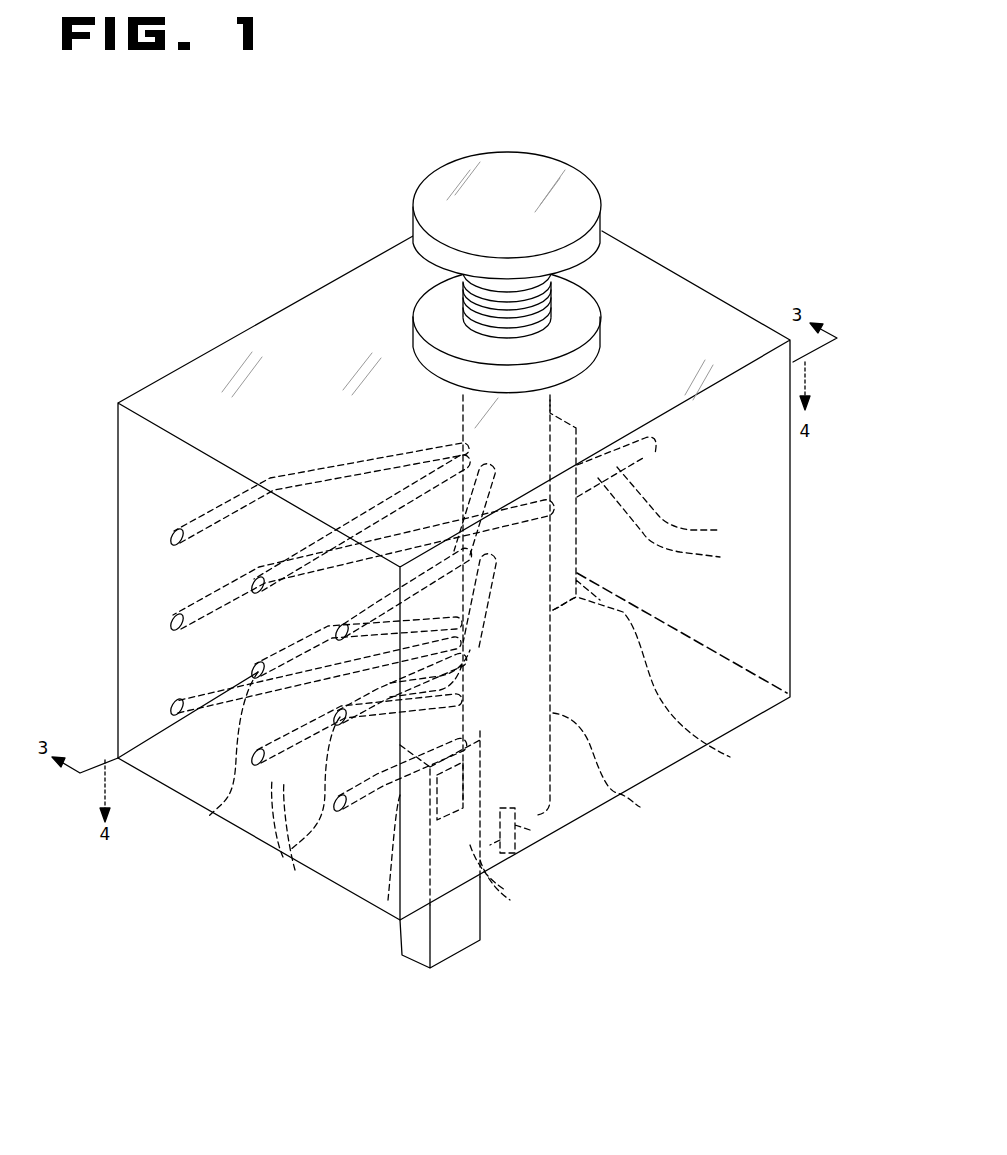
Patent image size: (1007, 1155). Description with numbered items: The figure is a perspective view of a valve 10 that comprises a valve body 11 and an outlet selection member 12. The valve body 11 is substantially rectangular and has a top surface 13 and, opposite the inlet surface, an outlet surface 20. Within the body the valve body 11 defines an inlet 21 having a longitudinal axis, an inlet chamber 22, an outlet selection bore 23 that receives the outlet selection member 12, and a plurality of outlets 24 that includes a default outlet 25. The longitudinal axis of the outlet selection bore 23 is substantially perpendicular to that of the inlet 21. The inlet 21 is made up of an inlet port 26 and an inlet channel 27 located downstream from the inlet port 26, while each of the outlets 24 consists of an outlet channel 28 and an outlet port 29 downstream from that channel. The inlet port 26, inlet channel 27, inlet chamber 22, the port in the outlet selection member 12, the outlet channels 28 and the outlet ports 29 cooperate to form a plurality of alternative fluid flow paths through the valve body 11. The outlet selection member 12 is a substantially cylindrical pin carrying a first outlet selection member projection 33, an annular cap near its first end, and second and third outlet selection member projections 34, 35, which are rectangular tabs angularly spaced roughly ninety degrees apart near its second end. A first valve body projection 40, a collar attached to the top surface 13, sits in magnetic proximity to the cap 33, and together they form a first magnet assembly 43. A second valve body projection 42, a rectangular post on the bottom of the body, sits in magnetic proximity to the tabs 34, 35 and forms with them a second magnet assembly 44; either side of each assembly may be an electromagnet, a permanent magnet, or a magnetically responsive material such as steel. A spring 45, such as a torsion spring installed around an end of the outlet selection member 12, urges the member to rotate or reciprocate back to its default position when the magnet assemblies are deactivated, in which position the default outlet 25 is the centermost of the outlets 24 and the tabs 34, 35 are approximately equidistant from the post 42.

The valve 10 is at (154, 223).
The valve body 11 is at (133, 430).
The outlet selection member 12 is at (552, 290).
The top surface 13 is at (333, 376).
The outlet surface 20 is at (220, 646).
The inlet 21 is at (720, 530).
The inlet chamber 22 is at (730, 757).
The outlet selection bore 23 is at (640, 807).
The plurality of outlets 24 is at (283, 857).
The default outlet 25 is at (212, 810).
The inlet port 26 is at (655, 455).
The inlet channel 27 is at (720, 557).
The outlet channel 28 is at (217, 507).
The outlet port 29 is at (170, 622).
The first outlet selection member projection 33 is at (513, 159).
The second outlet selection member projection 34 is at (375, 915).
The third outlet selection member projection 35 is at (557, 833).
The first valve body projection 40 is at (427, 322).
The second valve body projection 42 is at (460, 930).
The first magnet assembly 43 is at (428, 323).
The second magnet assembly 44 is at (510, 900).
The spring 45 is at (543, 323).